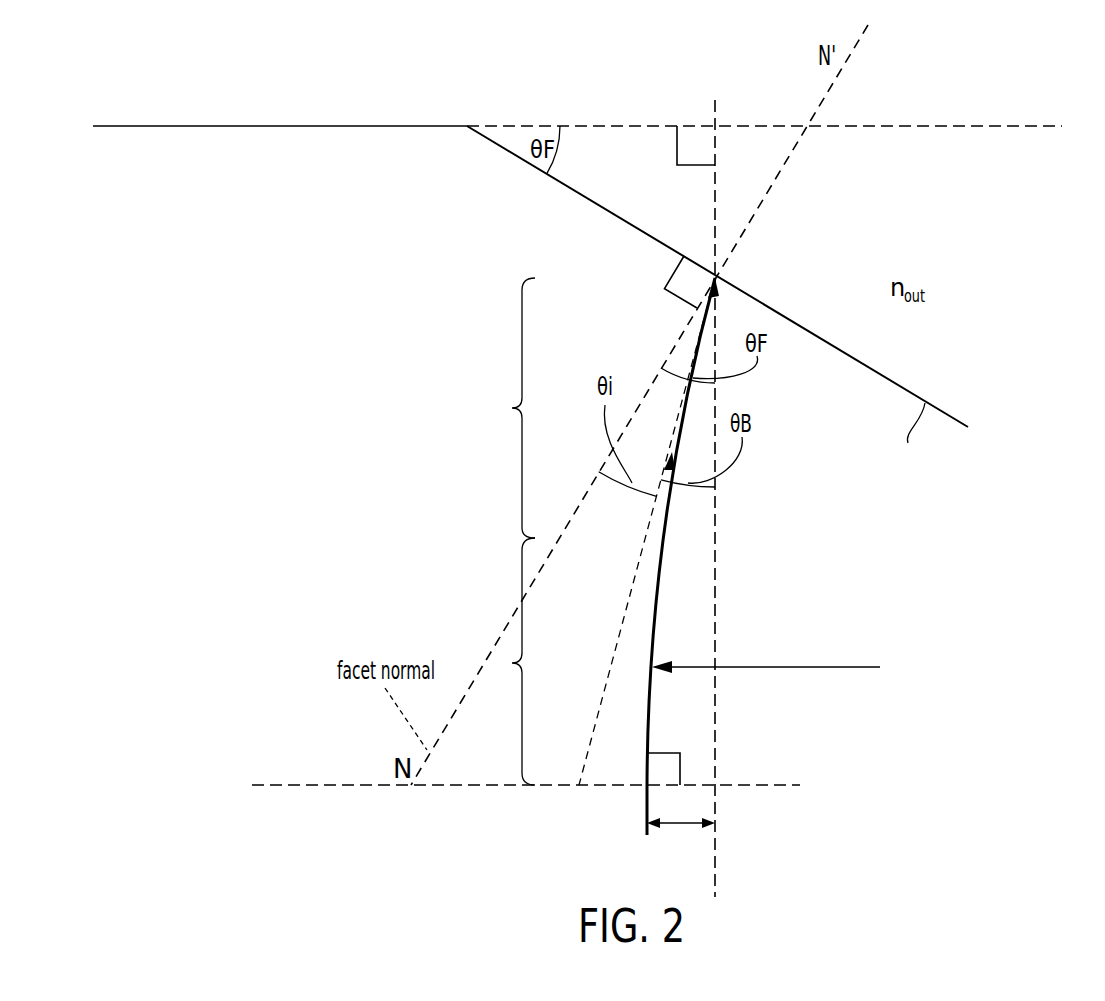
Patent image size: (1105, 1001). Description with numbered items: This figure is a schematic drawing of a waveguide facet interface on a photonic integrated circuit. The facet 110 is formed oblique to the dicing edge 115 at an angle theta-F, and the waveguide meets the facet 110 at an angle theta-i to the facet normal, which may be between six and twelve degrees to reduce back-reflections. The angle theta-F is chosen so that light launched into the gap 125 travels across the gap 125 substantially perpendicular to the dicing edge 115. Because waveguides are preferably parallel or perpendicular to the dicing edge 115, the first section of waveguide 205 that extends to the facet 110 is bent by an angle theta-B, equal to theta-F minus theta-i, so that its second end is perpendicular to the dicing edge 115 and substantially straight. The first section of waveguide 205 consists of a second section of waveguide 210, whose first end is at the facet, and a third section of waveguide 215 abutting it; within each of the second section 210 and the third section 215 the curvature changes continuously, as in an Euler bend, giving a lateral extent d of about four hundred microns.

The dicing edge 115 is at (300, 128).
The gap 125 is at (986, 124).
The facet 110 is at (625, 223).
The first section of waveguide 205 is at (650, 688).
The second section of waveguide 210 is at (505, 408).
The third section of waveguide 215 is at (505, 661).